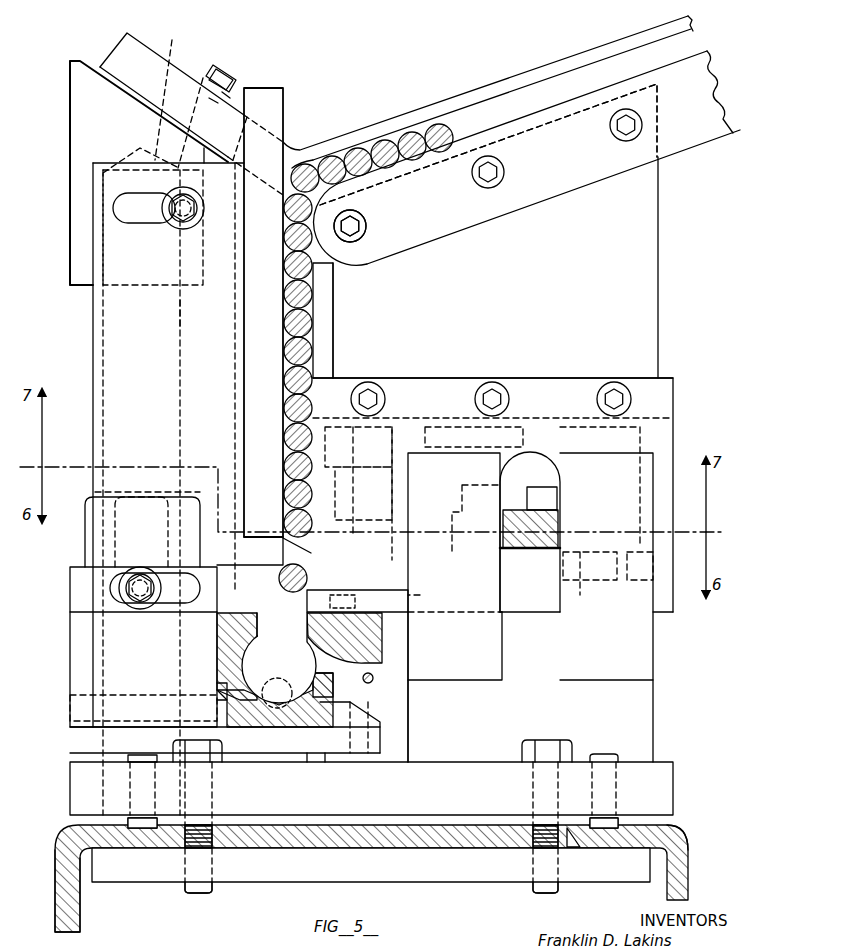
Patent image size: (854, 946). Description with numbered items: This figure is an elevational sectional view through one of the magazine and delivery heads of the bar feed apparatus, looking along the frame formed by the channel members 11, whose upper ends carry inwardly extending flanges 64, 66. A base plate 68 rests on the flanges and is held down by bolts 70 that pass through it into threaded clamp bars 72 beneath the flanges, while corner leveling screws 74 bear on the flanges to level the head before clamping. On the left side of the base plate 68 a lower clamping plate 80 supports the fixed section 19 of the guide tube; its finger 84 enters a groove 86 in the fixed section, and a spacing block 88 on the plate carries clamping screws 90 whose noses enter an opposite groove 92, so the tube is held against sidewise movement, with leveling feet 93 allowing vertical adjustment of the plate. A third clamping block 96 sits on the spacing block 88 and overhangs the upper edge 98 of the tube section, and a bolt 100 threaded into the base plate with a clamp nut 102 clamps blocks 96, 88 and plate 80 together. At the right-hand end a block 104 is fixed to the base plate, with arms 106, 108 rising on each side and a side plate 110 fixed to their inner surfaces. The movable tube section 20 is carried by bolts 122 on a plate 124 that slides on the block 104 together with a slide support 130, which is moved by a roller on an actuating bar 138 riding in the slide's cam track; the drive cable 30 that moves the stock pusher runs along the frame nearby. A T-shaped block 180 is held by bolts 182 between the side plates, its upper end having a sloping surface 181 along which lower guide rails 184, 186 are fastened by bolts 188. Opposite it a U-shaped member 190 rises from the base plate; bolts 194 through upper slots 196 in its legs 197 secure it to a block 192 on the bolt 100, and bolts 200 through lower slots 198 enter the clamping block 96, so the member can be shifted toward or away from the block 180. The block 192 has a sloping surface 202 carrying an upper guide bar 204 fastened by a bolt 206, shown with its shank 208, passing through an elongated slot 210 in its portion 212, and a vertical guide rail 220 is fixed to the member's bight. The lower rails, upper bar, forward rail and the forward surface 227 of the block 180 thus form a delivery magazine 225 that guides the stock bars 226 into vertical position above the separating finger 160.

The channel member 11 is at (54, 906).
The fixed section 19 is at (246, 738).
The movable section 20 is at (374, 674).
The drive cable 30 is at (373, 684).
The flange 64 is at (85, 826).
The flange 66 is at (672, 828).
The base plate 68 is at (371, 788).
The bolt 70 is at (558, 760).
The clamp bar 72 is at (371, 865).
The leveling screw 74 is at (594, 754).
The lower clamping plate 80 is at (225, 740).
The finger 84 is at (348, 700).
The groove 86 is at (328, 695).
The spacing block 88 is at (143, 669).
The clamping screw 90 is at (70, 711).
The groove 92 is at (215, 690).
The leveling foot 93 is at (118, 743).
The clamping block 96 is at (66, 599).
The upper edge 98 is at (250, 625).
The bolt 100 is at (168, 489).
The clamp nut 102 is at (82, 536).
The block 104 is at (530, 721).
The arm 106 is at (455, 646).
The arm 108 is at (616, 566).
The plate 110 is at (493, 398).
The bolt 122 is at (338, 644).
The plate 124 is at (359, 601).
The slide support 130 is at (489, 594).
The actuating bar 138 is at (512, 506).
The separating finger 160 is at (284, 552).
The T-shaped block 180 is at (526, 331).
The sloping surface 181 is at (539, 132).
The bolt 182 is at (383, 376).
The guide rail 184 is at (395, 224).
The guide rail 186 is at (350, 226).
The bolt 188 is at (357, 216).
The U-shaped member 190 is at (86, 330).
The block 192 is at (104, 173).
The bolt 194 is at (180, 226).
The upper slot 196 is at (139, 224).
The leg 197 is at (178, 310).
The slot 198 is at (118, 564).
The bolt 200 is at (138, 602).
The sloping surface 202 is at (93, 61).
The upper guide bar 204 is at (458, 102).
The bolt 206 is at (222, 67).
The bolt 208 is at (207, 74).
The elongated slot 210 is at (172, 32).
The portion 212 is at (137, 33).
The guide rail 220 is at (262, 254).
The delivery magazine 225 is at (510, 87).
The stock bar 226 is at (454, 126).
The forward surface 227 is at (330, 328).